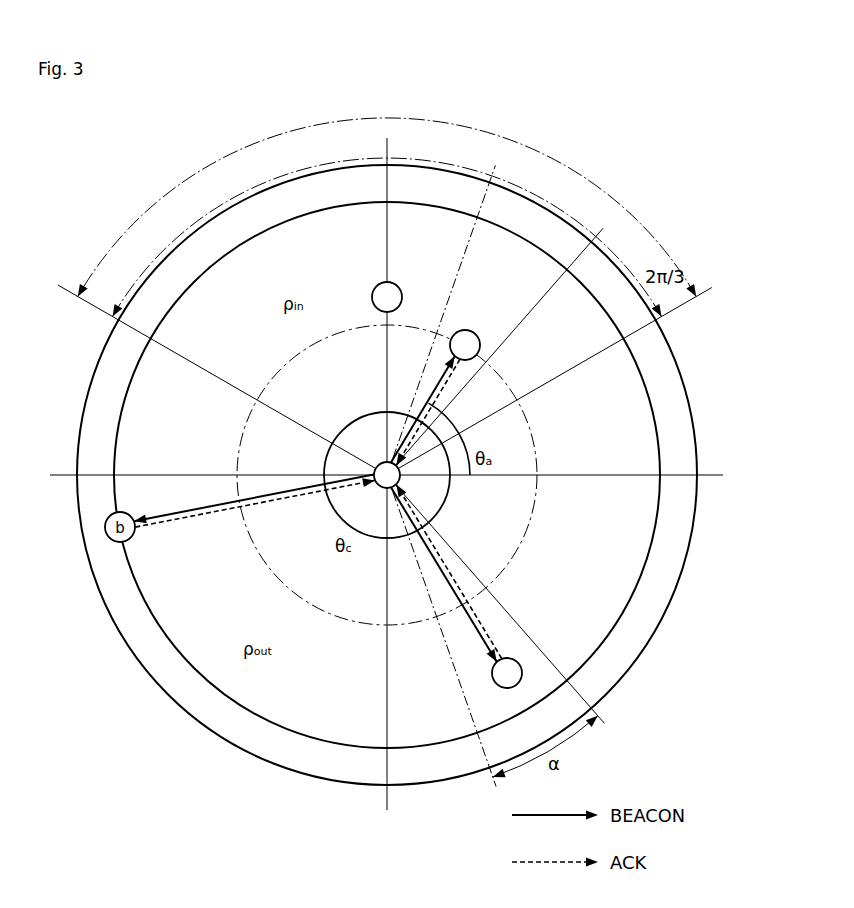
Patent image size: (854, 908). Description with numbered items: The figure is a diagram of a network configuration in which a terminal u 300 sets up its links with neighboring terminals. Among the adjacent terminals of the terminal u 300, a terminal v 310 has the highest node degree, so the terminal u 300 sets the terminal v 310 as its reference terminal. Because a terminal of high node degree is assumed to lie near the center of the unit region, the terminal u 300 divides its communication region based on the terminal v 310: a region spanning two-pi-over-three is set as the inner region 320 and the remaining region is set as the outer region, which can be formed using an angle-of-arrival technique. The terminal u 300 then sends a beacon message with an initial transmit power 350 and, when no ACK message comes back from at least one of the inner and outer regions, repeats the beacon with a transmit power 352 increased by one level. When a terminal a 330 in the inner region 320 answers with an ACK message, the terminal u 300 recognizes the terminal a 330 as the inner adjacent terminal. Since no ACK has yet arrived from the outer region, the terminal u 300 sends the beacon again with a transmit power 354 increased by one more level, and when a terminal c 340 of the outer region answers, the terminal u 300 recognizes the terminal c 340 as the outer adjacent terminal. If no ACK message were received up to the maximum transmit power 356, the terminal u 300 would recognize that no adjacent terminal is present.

The terminal u 300 is at (400, 482).
The terminal v 310 is at (398, 287).
The inner region 320 is at (414, 359).
The terminal a 330 is at (470, 330).
The terminal c 340 is at (522, 665).
The initial transmit power 350 is at (356, 420).
The transmit power 352 is at (530, 417).
The transmit power 354 is at (658, 420).
The maximum transmit power 356 is at (677, 585).